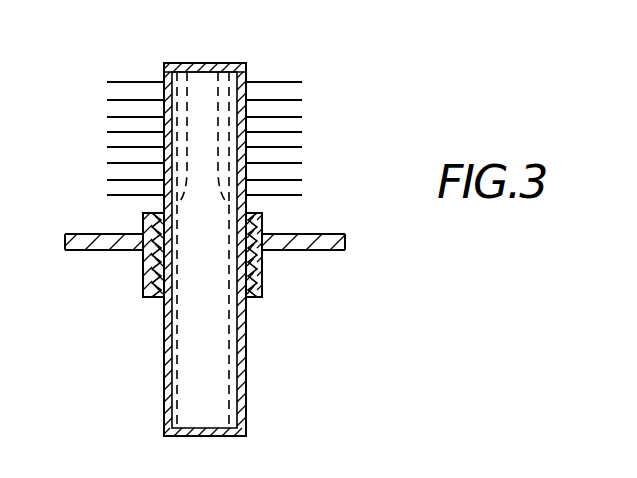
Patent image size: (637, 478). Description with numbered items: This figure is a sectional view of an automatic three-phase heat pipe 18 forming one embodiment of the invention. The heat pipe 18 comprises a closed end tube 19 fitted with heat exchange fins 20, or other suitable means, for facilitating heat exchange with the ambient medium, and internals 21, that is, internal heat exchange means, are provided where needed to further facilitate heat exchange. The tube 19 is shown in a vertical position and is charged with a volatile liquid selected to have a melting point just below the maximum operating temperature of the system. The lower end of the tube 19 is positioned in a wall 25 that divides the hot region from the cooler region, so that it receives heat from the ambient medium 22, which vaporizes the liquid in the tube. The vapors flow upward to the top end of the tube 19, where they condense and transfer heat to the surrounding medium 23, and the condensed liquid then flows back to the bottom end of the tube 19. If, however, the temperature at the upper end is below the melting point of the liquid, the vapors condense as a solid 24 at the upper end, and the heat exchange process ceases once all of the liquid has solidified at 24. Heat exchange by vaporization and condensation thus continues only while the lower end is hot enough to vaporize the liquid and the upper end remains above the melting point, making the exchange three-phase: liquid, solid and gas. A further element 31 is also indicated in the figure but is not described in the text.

The heat pipe 18 is at (222, 62).
The closed end tube 19 is at (162, 71).
The heat exchange fins 20 is at (298, 100).
The internals 21 is at (233, 330).
The ambient medium 22 is at (82, 355).
The surrounding medium 23 is at (73, 149).
The solid 24 is at (220, 149).
The wall 25 is at (83, 233).
The fitting 31 is at (533, 477).